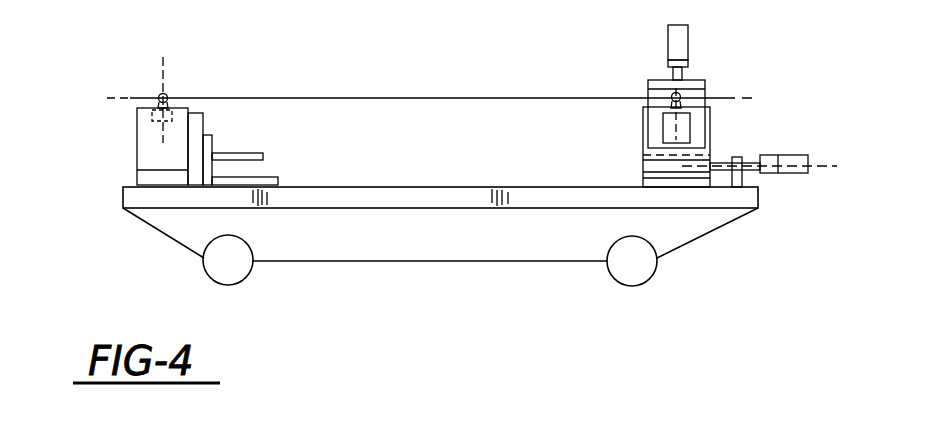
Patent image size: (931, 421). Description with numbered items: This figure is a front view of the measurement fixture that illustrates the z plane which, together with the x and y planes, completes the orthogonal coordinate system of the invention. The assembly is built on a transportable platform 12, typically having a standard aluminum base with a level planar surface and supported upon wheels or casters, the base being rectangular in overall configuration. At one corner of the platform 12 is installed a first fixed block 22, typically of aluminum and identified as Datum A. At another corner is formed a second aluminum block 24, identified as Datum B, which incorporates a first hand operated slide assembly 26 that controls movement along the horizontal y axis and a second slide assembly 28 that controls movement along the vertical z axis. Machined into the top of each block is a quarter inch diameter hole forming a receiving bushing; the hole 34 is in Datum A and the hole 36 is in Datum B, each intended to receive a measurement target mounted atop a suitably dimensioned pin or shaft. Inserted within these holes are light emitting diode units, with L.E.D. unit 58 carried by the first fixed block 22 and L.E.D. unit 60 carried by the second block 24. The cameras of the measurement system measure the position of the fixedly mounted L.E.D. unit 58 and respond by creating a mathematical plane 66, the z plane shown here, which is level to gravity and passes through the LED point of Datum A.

The transportable platform 12 is at (108, 200).
The first fixed block 22 is at (137, 145).
The second aluminum block 24 is at (672, 125).
The first hand operated slide assembly 26 is at (790, 155).
The second slide assembly 28 is at (672, 48).
The hole 34 is at (136, 106).
The hole 36 is at (670, 108).
The L.E.D. unit 58 is at (164, 94).
The L.E.D. unit 60 is at (682, 100).
The mathematical plane 66 is at (422, 97).